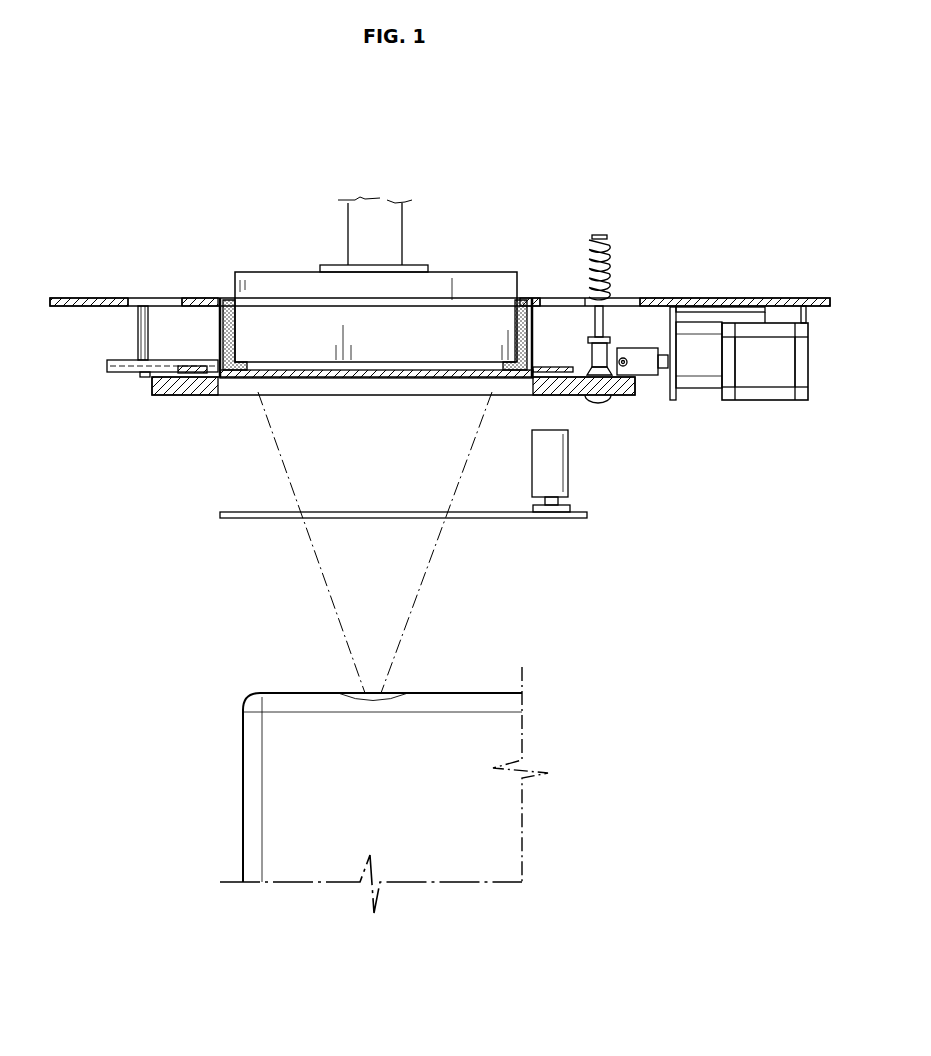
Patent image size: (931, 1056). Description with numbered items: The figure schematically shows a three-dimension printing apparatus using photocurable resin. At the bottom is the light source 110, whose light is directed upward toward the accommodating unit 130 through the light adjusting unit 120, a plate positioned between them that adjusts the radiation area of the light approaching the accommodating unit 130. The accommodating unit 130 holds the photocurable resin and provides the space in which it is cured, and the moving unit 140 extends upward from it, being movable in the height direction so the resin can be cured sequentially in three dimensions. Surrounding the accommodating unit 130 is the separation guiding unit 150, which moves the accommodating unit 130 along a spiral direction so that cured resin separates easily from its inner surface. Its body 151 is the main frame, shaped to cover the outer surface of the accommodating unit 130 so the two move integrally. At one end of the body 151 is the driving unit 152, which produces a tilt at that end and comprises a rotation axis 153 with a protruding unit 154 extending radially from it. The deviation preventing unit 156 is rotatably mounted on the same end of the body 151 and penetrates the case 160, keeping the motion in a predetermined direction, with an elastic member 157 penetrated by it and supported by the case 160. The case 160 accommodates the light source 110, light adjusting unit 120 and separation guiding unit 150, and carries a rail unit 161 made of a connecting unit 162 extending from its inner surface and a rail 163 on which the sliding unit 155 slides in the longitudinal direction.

The light source 110 is at (390, 695).
The light adjusting unit 120 is at (510, 518).
The accommodating unit 130 is at (527, 320).
The moving unit 140 is at (393, 235).
The separation guiding unit 150 is at (712, 178).
The body 151 is at (203, 388).
The driving unit 152 is at (702, 348).
The rotation axis 153 is at (656, 362).
The protruding unit 154 is at (623, 372).
The sliding unit 155 is at (152, 372).
The deviation preventing unit 156 is at (602, 317).
The elastic member 157 is at (608, 263).
The case 160 is at (755, 302).
The rail unit 161 is at (128, 462).
The connecting unit 162 is at (137, 333).
The rail 163 is at (125, 372).